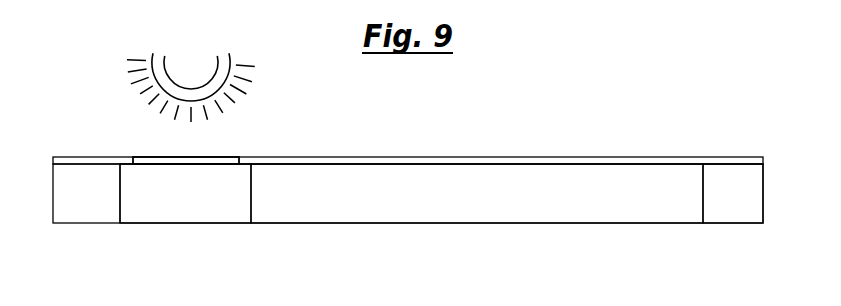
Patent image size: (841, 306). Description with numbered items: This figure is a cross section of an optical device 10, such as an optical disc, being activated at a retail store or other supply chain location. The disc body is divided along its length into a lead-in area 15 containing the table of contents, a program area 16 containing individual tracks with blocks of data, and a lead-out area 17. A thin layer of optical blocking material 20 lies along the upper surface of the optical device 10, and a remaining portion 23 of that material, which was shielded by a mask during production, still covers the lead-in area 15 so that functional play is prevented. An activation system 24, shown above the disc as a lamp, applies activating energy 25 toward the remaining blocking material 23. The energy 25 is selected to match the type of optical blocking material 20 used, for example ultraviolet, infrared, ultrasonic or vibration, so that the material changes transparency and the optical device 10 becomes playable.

The optical device 10 is at (352, 222).
The lead-in area 15 is at (177, 213).
The program area 16 is at (530, 203).
The lead-out area 17 is at (732, 203).
The optical blocking material 20 is at (453, 162).
The portion of the optical blocking material 23 is at (158, 160).
The activation system 24 is at (226, 71).
The activating energy 25 is at (238, 92).